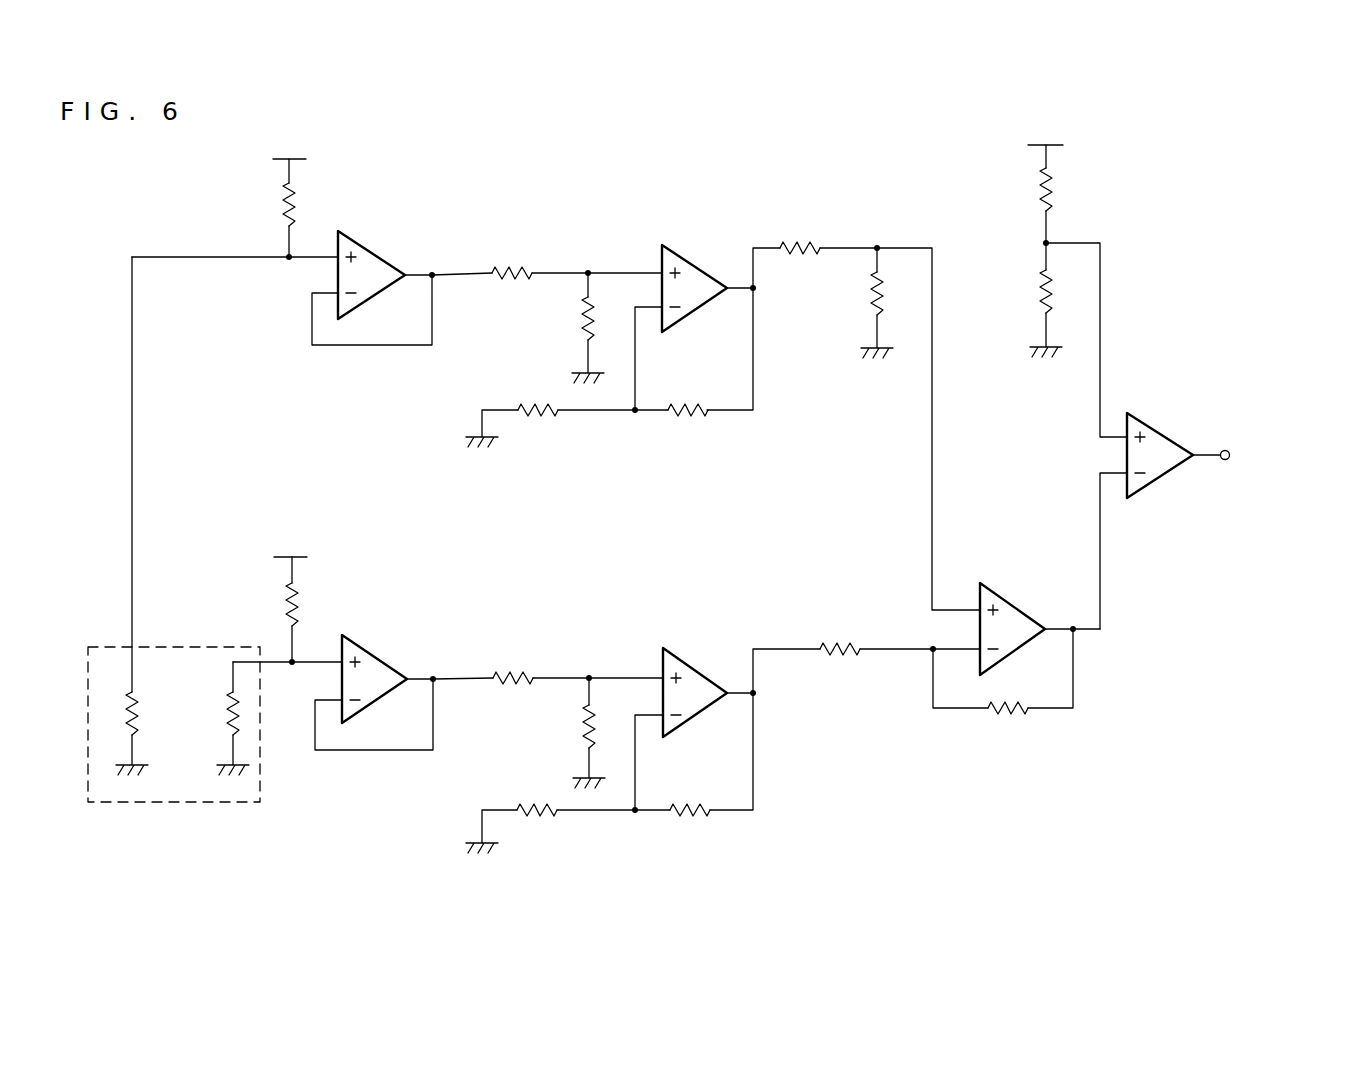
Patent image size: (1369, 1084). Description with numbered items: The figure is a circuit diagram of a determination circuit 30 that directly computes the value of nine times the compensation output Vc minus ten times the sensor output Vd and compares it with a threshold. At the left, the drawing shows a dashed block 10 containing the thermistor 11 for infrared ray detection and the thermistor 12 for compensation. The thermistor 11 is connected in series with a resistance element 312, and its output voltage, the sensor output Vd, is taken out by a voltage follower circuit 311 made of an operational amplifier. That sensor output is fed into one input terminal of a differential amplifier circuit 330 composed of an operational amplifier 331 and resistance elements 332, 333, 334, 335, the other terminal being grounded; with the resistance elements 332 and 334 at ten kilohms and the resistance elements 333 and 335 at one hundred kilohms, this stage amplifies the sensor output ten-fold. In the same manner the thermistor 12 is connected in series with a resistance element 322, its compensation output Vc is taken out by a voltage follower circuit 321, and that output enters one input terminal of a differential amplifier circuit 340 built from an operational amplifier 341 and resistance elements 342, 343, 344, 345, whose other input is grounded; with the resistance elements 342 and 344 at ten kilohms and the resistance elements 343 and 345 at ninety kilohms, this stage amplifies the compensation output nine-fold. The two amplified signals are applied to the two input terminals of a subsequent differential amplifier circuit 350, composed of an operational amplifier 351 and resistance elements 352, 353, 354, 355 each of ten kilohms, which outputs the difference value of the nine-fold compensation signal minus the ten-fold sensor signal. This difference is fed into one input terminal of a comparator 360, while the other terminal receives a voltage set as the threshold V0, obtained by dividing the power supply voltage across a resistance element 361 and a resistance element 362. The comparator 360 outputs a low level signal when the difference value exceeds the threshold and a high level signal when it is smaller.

The sensor unit 10 is at (170, 802).
The thermistor for infrared ray detection 11 is at (222, 708).
The thermistor for compensation 12 is at (152, 718).
The determination circuit 30 is at (1177, 262).
The voltage follower circuit 311 is at (375, 652).
The resistance element 312 is at (283, 600).
The voltage follower circuit 321 is at (372, 250).
The resistance element 322 is at (283, 200).
The differential amplifier circuit 330 is at (612, 605).
The operational amplifier 331 is at (697, 665).
The resistance element 332 is at (545, 822).
The resistance element 333 is at (697, 822).
The resistance element 334 is at (520, 662).
The resistance element 335 is at (578, 730).
The differential amplifier circuit 340 is at (617, 178).
The operational amplifier 341 is at (695, 260).
The resistance element 342 is at (545, 425).
The resistance element 343 is at (697, 425).
The resistance element 344 is at (518, 262).
The resistance element 345 is at (576, 325).
The differential amplifier circuit 350 is at (1112, 658).
The operational amplifier 351 is at (1015, 600).
The resistance element 352 is at (847, 637).
The resistance element 353 is at (1013, 722).
The resistance element 354 is at (810, 237).
The resistance element 355 is at (868, 300).
The comparator 360 is at (1162, 428).
The resistance element 361 is at (1035, 190).
The resistance element 362 is at (1035, 290).